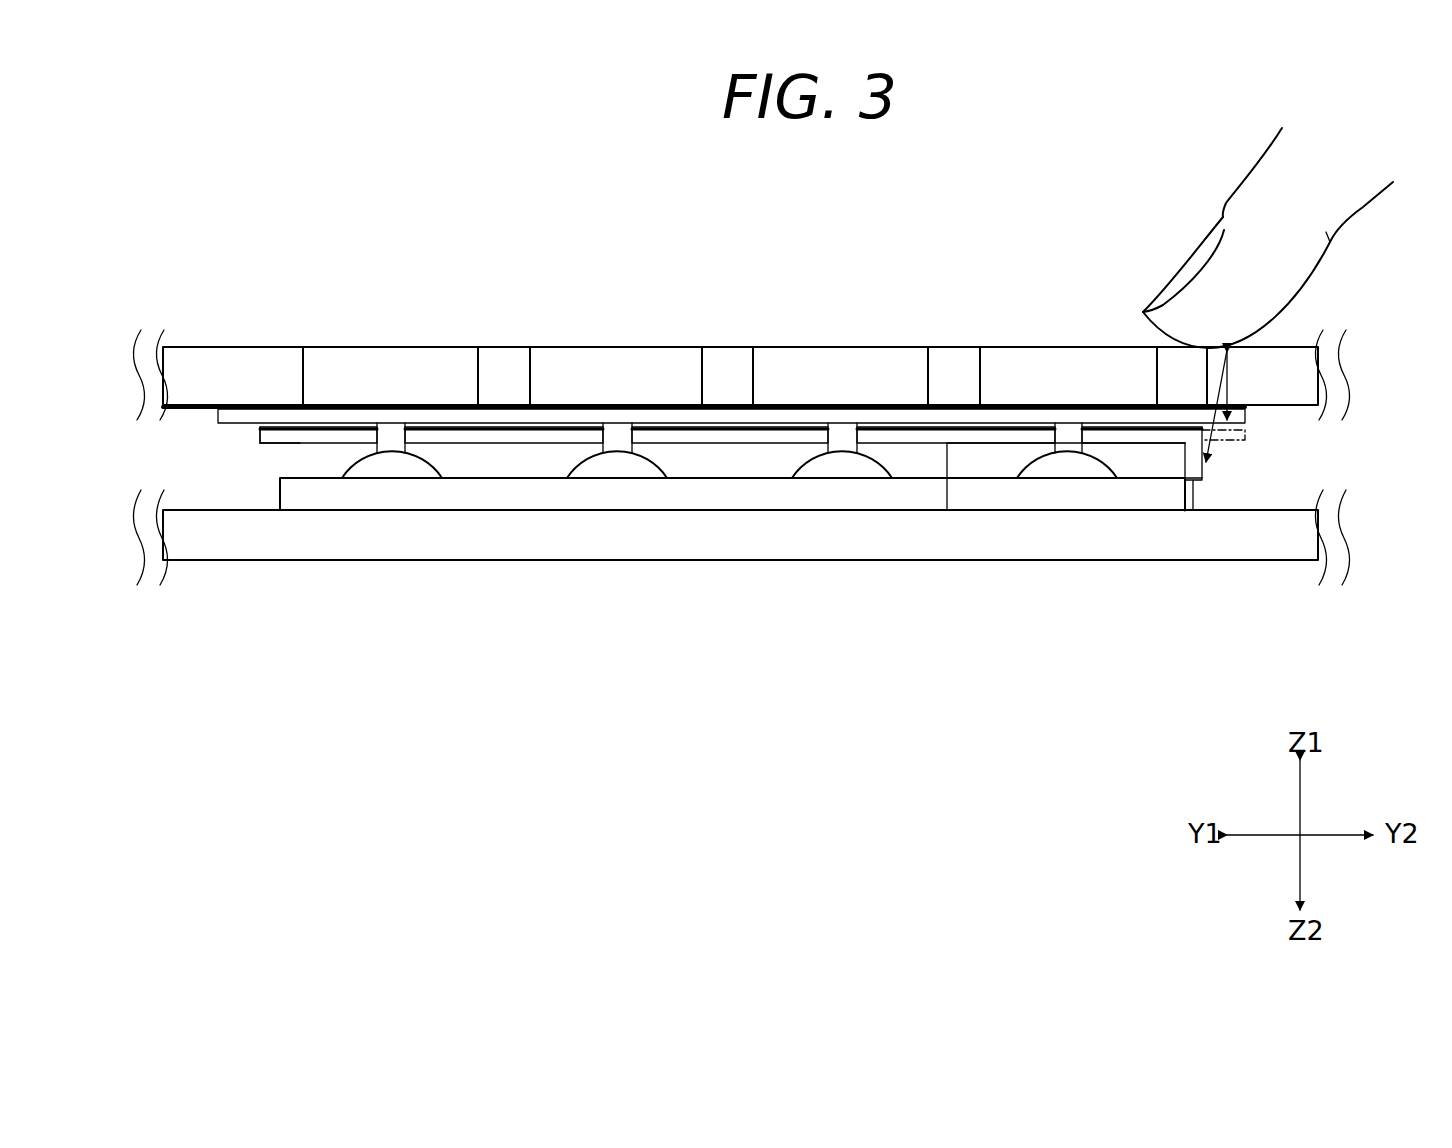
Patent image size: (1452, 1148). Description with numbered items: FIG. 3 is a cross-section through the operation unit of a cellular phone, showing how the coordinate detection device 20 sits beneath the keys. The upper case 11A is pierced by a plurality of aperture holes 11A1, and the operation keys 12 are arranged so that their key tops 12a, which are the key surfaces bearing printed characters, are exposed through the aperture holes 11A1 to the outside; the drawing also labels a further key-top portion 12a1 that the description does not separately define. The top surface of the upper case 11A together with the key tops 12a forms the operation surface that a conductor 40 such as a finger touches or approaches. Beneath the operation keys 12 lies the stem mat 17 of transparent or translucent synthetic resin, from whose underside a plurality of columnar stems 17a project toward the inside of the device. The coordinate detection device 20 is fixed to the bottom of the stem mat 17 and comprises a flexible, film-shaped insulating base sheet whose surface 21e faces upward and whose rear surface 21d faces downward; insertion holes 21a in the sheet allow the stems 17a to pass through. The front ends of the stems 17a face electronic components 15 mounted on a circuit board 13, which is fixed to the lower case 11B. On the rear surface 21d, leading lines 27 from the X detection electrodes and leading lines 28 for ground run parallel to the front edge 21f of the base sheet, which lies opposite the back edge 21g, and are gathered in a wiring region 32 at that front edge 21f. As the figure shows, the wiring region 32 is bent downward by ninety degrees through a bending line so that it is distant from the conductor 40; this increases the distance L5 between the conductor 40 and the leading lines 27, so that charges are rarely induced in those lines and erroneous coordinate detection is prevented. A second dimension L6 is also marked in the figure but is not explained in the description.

The upper case 11A is at (1296, 347).
The aperture holes 11A1 is at (308, 372).
The operation keys 12 is at (390, 372).
The key tops 12a is at (447, 348).
The end gap region 12a1 is at (1095, 348).
The stem mat 17 is at (1008, 415).
The stems 17a is at (384, 437).
The insertion holes 21a is at (412, 440).
The surface 21e is at (303, 430).
The back edge 21g is at (260, 433).
The rear surface 21d is at (272, 446).
The front edge 21f is at (1198, 500).
The electronic components 15 is at (397, 472).
The circuit board 13 is at (1168, 495).
The lower case 11B is at (1300, 565).
The wiring region 32 is at (1203, 470).
The leading lines 27 is at (1205, 470).
The leading lines for ground 28 is at (1210, 482).
The coordinate detection device 20 is at (1206, 487).
The distance L5 is at (1221, 383).
The distance L6 is at (1232, 383).
The conductor 40 is at (1365, 203).